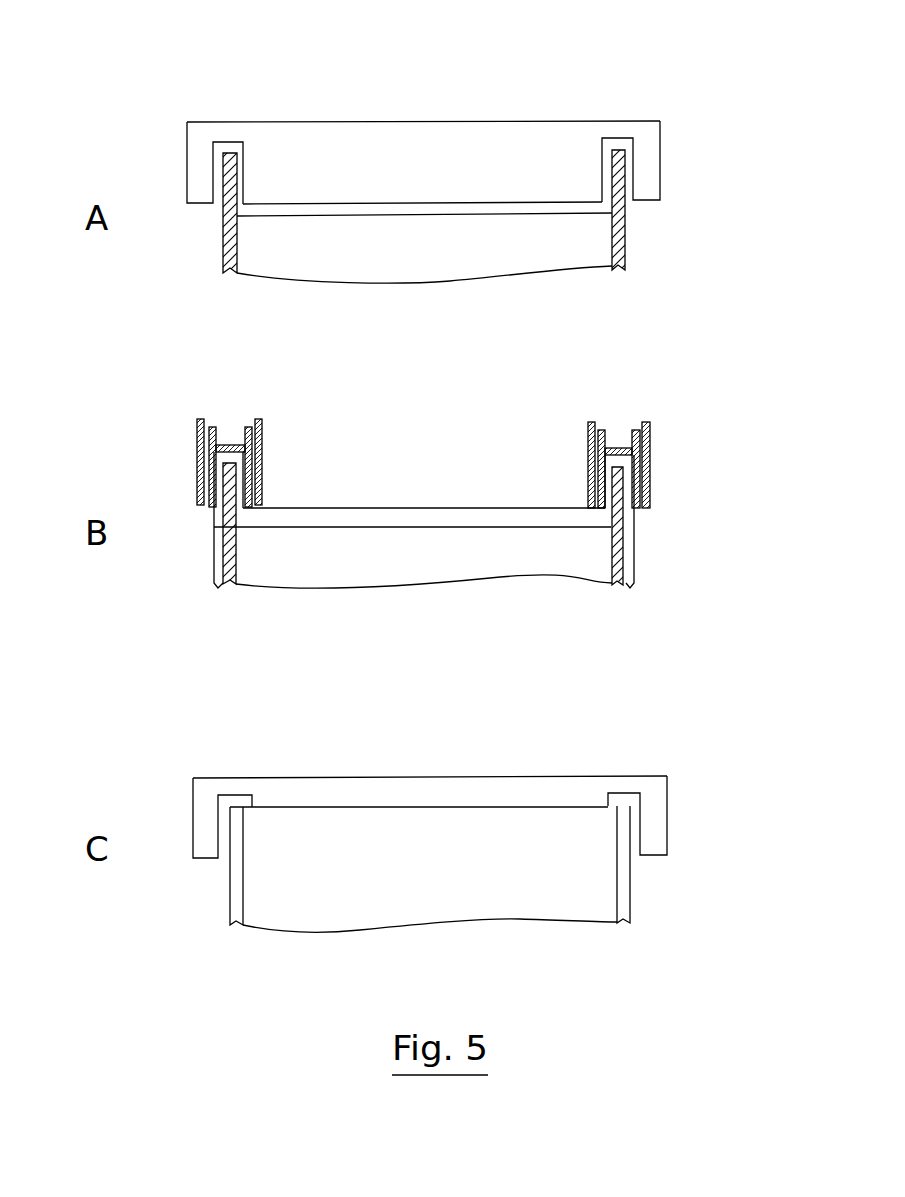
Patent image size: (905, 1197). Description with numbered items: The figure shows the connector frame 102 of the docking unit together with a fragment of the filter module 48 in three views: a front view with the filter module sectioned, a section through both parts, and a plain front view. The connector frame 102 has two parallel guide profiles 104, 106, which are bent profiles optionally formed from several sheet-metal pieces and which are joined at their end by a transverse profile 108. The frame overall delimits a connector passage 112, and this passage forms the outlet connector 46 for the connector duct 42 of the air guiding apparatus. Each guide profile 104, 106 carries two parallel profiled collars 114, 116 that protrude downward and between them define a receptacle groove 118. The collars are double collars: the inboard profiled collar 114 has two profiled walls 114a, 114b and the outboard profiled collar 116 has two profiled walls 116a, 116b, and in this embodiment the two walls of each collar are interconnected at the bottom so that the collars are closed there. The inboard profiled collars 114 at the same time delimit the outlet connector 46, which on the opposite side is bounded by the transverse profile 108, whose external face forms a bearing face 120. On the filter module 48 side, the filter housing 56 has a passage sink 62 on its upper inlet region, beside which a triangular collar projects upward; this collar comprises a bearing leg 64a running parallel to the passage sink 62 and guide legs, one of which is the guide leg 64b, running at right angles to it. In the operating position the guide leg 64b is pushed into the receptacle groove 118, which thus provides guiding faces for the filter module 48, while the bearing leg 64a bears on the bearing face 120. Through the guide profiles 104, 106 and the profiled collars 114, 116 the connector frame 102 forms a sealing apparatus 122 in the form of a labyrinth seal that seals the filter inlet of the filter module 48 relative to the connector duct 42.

In FIG. 5B, the connector duct 42 is at (537, 498).
In FIG. 5A, the outlet connector 46 is at (563, 184).
In FIG. 5B, the outlet connector 46 is at (258, 465).
In FIG. 5A, the filter module 48 is at (318, 242).
In FIG. 5B, the filter module 48 is at (293, 570).
In FIG. 5C, the filter module 48 is at (308, 915).
In FIG. 5A, the filter housing 56 is at (597, 255).
In FIG. 5B, the filter housing 56 is at (600, 572).
In FIG. 5C, the filter housing 56 is at (581, 893).
In FIG. 5A, the passage sink 62 is at (455, 214).
In FIG. 5B, the passage sink 62 is at (400, 530).
In FIG. 5A, the bearing leg 64a is at (622, 158).
In FIG. 5B, the bearing leg 64a is at (623, 513).
In FIG. 5C, the bearing leg 64a is at (472, 820).
In FIG. 5A, the guide leg 64b is at (222, 167).
In FIG. 5B, the guide leg 64b is at (223, 528).
In FIG. 5A, the connector frame 102 is at (416, 107).
In FIG. 5B, the connector frame 102 is at (421, 508).
In FIG. 5C, the connector frame 102 is at (430, 774).
In FIG. 5A, the guide profile 104 is at (650, 180).
In FIG. 5B, the guide profile 104 is at (644, 490).
In FIG. 5C, the guide profile 104 is at (658, 838).
In FIG. 5A, the guide profile 106 is at (190, 179).
In FIG. 5B, the guide profile 106 is at (216, 499).
In FIG. 5C, the guide profile 106 is at (205, 810).
In FIG. 5A, the transverse profile 108 is at (351, 152).
In FIG. 5B, the connector passage 112 is at (587, 448).
In FIG. 5B, the profiled collar 114 is at (435, 430).
In FIG. 5B, the profiled wall 114a is at (262, 473).
In FIG. 5B, the profiled wall 114b is at (262, 492).
In FIG. 5B, the profiled collar 116 is at (426, 426).
In FIG. 5B, the profiled wall 116a is at (197, 437).
In FIG. 5B, the profiled wall 116b is at (207, 465).
In FIG. 5A, the receptacle groove 118 is at (429, 174).
In FIG. 5B, the receptacle groove 118 is at (424, 575).
In FIG. 5C, the receptacle groove 118 is at (429, 907).
In FIG. 5A, the bearing face 120 is at (457, 184).
In FIG. 5C, the bearing face 120 is at (575, 807).
In FIG. 5B, the sealing apparatus 122 is at (272, 441).